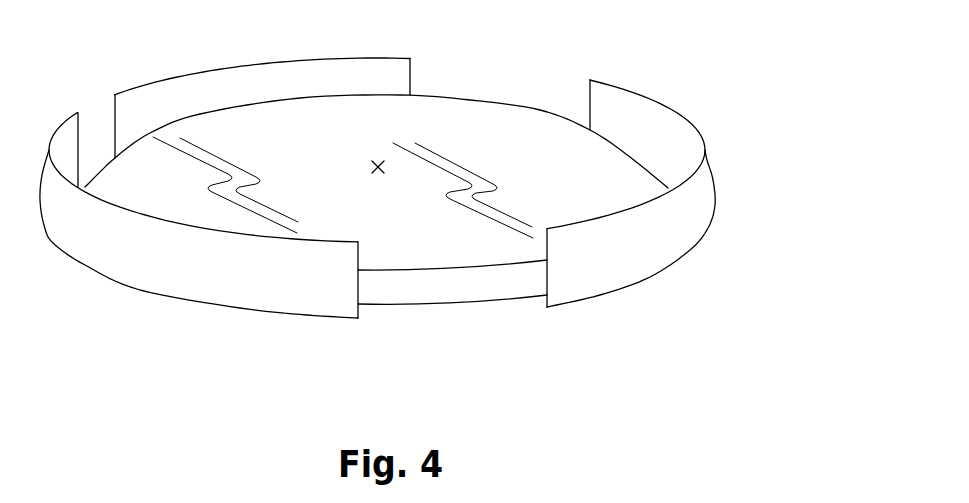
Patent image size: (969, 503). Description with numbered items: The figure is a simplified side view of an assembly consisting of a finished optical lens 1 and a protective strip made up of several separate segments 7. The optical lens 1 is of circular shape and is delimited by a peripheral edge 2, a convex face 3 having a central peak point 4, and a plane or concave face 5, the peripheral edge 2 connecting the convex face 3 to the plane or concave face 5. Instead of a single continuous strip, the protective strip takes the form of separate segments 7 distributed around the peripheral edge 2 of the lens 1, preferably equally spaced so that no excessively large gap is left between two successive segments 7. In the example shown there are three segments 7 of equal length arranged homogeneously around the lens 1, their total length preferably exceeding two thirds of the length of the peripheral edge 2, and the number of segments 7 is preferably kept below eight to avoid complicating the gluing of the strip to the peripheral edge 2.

The optical lens 1 is at (476, 158).
The peripheral edge 2 is at (500, 278).
The convex face 3 is at (533, 157).
The central peak point 4 is at (377, 167).
The plane or concave face 5 is at (433, 305).
The segments 7 is at (252, 93).